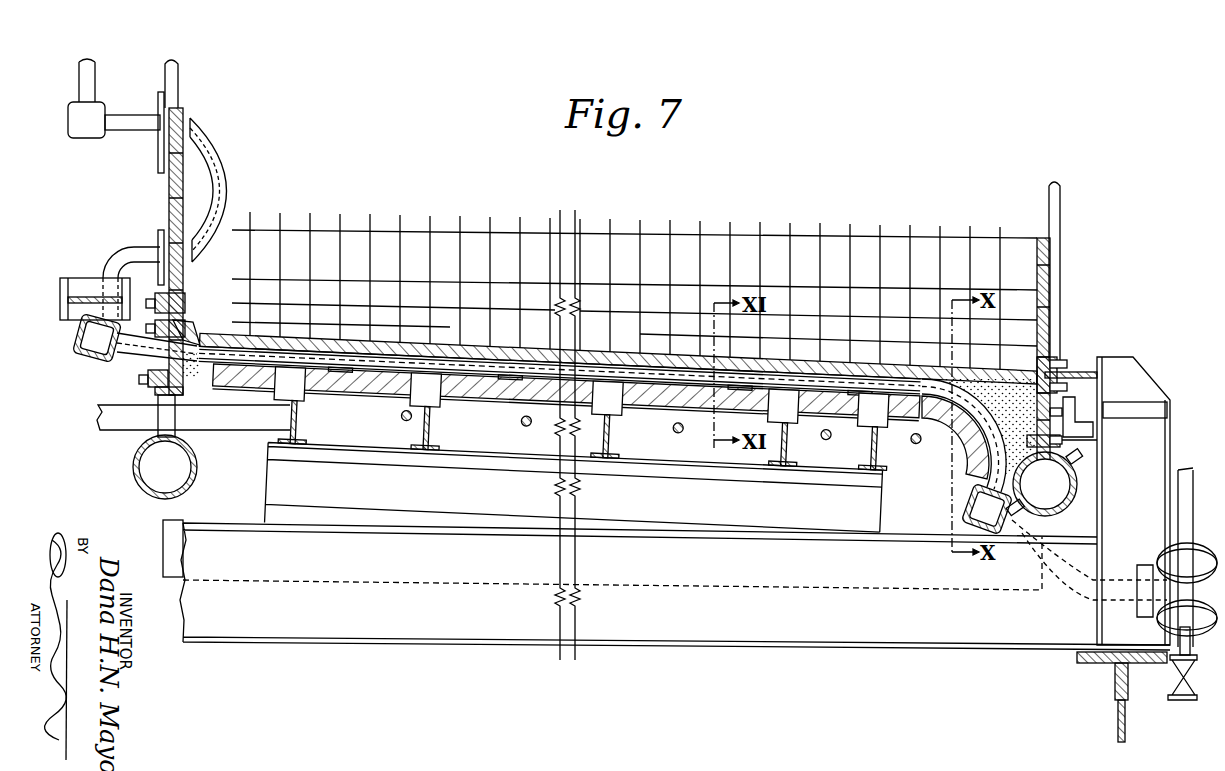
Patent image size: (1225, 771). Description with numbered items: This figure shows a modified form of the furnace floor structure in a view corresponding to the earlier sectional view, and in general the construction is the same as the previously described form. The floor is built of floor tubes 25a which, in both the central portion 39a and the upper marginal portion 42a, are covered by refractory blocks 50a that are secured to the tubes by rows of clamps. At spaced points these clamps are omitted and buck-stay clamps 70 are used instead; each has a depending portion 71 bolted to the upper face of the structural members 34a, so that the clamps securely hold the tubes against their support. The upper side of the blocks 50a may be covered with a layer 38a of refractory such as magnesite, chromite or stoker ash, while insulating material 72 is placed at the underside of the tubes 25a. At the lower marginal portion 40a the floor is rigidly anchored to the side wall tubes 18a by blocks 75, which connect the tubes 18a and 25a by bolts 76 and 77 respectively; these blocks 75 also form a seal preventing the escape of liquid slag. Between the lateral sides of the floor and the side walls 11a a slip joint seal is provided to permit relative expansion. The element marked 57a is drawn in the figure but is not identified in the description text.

The side wall tubes 18a is at (179, 72).
The side walls 11a is at (183, 112).
The upper marginal portion 42a is at (197, 322).
The central portion 39a is at (590, 352).
The layer of refractory 38a is at (650, 357).
The floor tubes 25a is at (367, 358).
The refractory blocks 50a is at (505, 362).
The insulating material 72 is at (692, 405).
The buck-stay clamps 70 is at (437, 385).
The depending portions 71 is at (600, 412).
The hanger post 57a is at (813, 422).
The structural members 34a is at (433, 437).
The lower marginal portion 40a is at (1035, 372).
The blocks 75 is at (981, 427).
The bolts 76 is at (980, 464).
The bolts 77 is at (1062, 444).